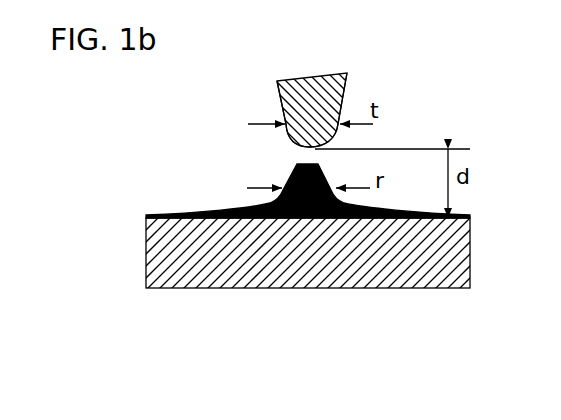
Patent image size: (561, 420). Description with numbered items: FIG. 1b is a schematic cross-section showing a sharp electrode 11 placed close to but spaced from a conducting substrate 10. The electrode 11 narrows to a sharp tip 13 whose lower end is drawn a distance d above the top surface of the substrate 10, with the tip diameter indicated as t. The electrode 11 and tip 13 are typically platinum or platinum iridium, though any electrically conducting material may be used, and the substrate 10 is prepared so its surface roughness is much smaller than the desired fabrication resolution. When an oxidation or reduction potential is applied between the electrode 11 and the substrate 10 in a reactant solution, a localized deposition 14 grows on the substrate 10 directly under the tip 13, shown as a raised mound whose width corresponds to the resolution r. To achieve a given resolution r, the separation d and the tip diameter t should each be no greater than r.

The conducting substrate 10 is at (327, 289).
The electrode 11 is at (310, 101).
The sharp tip 13 is at (290, 136).
The deposition 14 is at (267, 206).